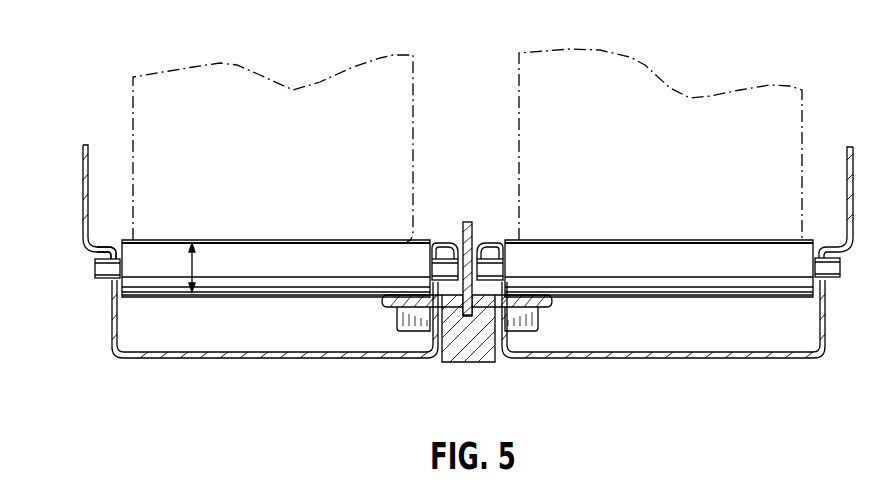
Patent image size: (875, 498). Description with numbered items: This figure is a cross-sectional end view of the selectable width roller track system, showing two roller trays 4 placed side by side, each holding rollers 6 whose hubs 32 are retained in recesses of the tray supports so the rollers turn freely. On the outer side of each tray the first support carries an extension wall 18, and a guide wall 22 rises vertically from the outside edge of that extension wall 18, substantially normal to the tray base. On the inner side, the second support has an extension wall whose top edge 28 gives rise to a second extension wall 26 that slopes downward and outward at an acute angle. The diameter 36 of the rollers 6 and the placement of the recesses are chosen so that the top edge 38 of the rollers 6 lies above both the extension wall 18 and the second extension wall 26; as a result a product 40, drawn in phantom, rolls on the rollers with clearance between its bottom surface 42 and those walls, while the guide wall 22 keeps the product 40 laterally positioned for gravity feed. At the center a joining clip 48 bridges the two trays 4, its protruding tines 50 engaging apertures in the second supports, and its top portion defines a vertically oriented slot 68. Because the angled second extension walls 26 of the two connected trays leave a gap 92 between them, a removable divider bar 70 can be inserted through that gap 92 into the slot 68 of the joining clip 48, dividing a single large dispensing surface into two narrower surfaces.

The roller tray 4 is at (280, 360).
The roller 6 is at (240, 298).
The extension wall 18 is at (101, 247).
The guide wall 22 is at (83, 170).
The second extension wall 26 is at (447, 244).
The top edge 28 is at (835, 240).
The roller hub 32 is at (103, 282).
The roller diameter 36 is at (196, 262).
The top edge of the rollers 38 is at (268, 240).
The product 40 is at (255, 72).
The bottom surface of the product 42 is at (342, 238).
The joining clip 48 is at (446, 362).
The protruding tine 50 is at (868, 492).
The slot 68 is at (480, 300).
The divider bar 70 is at (470, 228).
The gap 92 is at (477, 232).